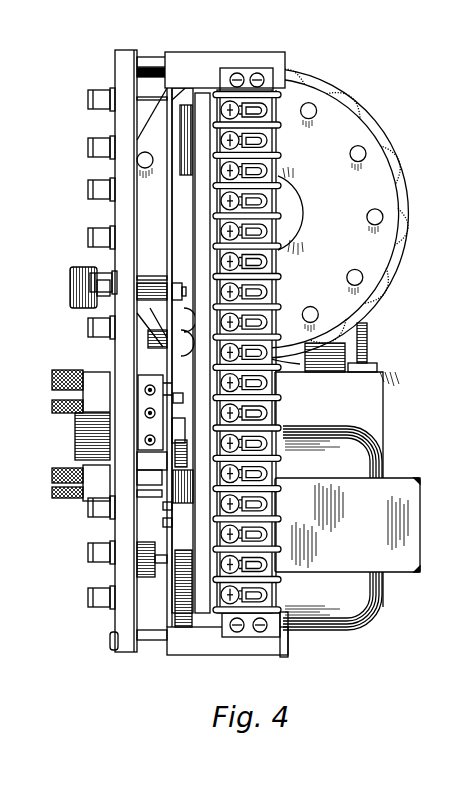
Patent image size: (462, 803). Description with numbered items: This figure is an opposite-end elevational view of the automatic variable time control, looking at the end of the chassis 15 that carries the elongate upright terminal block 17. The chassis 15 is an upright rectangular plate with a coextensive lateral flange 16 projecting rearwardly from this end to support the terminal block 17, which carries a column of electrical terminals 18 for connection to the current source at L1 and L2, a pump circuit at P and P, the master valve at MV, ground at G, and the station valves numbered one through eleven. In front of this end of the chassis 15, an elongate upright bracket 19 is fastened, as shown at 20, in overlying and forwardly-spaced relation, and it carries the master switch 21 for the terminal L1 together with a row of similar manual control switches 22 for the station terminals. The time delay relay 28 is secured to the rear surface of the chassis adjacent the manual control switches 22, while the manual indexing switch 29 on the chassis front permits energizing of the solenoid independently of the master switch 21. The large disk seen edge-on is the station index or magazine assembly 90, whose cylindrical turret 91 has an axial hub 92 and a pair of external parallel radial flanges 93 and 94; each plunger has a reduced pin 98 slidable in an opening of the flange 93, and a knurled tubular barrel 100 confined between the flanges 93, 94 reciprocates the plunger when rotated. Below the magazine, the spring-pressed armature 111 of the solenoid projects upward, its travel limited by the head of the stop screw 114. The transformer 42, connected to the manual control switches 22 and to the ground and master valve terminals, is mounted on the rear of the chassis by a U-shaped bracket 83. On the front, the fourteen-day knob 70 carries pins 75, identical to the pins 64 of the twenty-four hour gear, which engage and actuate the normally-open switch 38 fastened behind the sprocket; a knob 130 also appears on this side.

The chassis 15 is at (167, 108).
The lateral flange 16 is at (204, 52).
The terminal block 17 is at (283, 497).
The electrical terminals 18 is at (263, 637).
The bracket 19 is at (126, 50).
The fastening 20 is at (145, 653).
The master switch 21 is at (108, 605).
The manual control switches 22 is at (112, 90).
The time delay relay 28 is at (172, 222).
The manual indexing switch 29 is at (88, 163).
The normally-open switch 38 is at (140, 375).
The transformer 42 is at (365, 617).
The pins 64 is at (52, 378).
The knob 70 is at (75, 438).
The pins 75 is at (52, 477).
The U-shaped bracket 83 is at (400, 478).
The station index or magazine assembly 90 is at (343, 100).
The magazine or turret 91 is at (398, 113).
The hub 92 is at (283, 255).
The radial flange 93 is at (388, 258).
The radial flange 94 is at (405, 170).
The pin 98 is at (348, 155).
The knob or tubular barrel 100 is at (396, 218).
The armature 111 is at (325, 372).
The stop screw 114 is at (367, 333).
The knob 130 is at (70, 288).